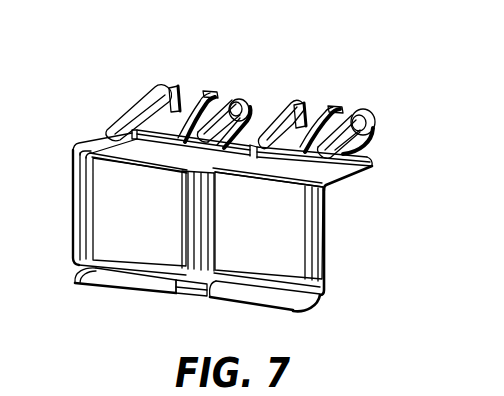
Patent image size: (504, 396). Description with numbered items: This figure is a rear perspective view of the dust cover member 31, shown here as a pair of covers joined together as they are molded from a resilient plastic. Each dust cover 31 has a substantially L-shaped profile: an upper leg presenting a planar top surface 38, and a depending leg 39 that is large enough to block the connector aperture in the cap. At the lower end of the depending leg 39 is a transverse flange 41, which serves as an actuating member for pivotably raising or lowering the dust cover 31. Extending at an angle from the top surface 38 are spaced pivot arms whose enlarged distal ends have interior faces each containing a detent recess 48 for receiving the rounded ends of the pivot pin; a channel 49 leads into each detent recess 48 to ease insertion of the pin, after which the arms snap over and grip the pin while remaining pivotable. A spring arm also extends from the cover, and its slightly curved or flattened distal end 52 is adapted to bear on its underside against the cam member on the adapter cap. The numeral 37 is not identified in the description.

The dust cover member 31 is at (218, 218).
The top plate 37 is at (149, 154).
The planar top surface 38 is at (96, 137).
The depending leg 39 is at (74, 203).
The transverse flange 41 is at (120, 291).
The detent recess 48 is at (184, 88).
The channel 49 is at (192, 90).
The distal end of spring arm 52 is at (212, 89).